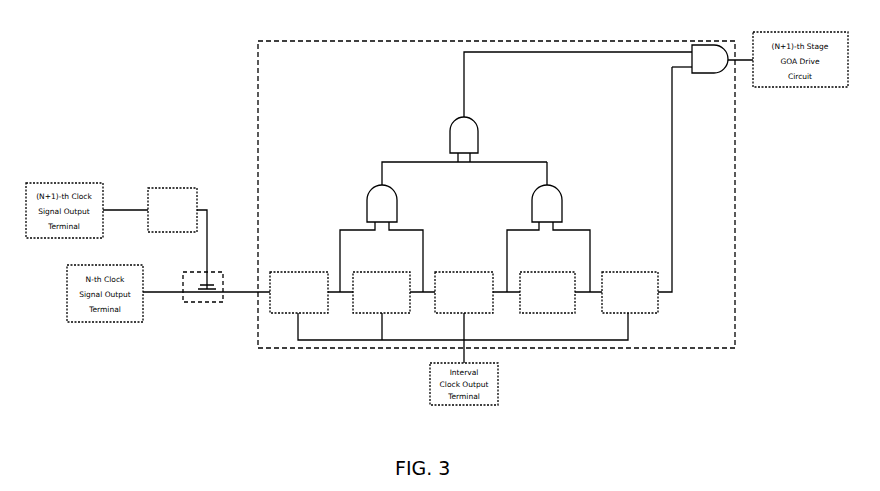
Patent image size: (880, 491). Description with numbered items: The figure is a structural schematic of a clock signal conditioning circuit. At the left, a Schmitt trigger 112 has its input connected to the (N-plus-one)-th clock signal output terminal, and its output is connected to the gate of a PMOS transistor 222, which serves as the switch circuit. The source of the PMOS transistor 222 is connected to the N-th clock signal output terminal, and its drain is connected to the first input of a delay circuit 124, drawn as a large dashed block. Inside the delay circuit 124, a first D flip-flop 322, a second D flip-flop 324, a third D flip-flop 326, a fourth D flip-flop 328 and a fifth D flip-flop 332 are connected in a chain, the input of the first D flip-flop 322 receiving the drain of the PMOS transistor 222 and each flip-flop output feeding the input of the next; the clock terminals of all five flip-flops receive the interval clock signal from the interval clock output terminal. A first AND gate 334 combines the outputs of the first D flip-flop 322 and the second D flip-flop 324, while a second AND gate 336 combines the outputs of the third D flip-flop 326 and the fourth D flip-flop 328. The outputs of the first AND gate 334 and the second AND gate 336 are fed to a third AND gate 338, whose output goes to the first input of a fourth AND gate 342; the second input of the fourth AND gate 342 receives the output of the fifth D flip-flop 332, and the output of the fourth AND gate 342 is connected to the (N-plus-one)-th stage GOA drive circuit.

The Schmitt trigger 112 is at (176, 190).
The delay circuit 124 is at (675, 41).
The PMOS transistor 222 is at (219, 273).
The first D flip-flop 322 is at (292, 272).
The second D flip-flop 324 is at (370, 272).
The third D flip-flop 326 is at (455, 272).
The fourth D flip-flop 328 is at (530, 272).
The fifth D flip-flop 332 is at (625, 272).
The first AND gate 334 is at (392, 190).
The second AND gate 336 is at (556, 190).
The third AND gate 338 is at (478, 120).
The fourth AND gate 342 is at (712, 73).